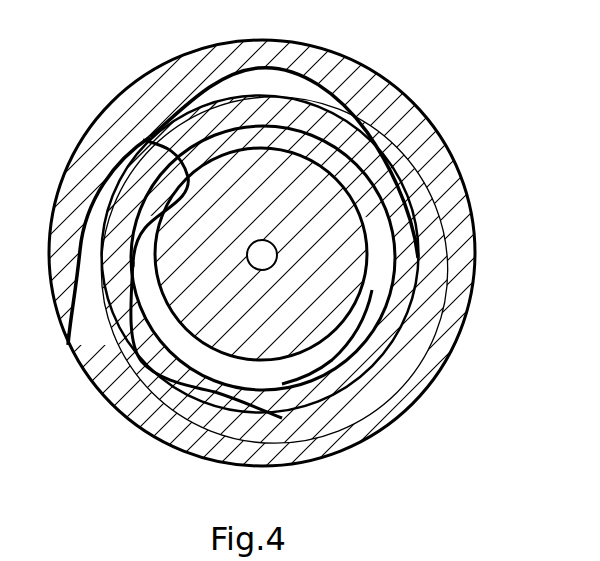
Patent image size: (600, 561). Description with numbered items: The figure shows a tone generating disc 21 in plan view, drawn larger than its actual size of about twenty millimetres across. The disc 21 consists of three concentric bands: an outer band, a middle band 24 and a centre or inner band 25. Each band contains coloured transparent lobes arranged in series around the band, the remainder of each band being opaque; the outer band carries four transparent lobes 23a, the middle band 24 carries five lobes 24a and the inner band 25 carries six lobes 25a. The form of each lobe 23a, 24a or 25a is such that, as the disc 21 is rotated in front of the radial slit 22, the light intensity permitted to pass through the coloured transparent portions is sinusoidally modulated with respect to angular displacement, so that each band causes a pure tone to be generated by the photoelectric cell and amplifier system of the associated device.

The disc 21 is at (407, 387).
The radial slit 22 is at (400, 217).
The middle band 24 is at (438, 242).
The inner band 25 is at (380, 267).
The transparent lobes of the outer band 23a is at (285, 87).
The transparent lobes of the middle band 24a is at (150, 143).
The transparent lobes of the inner band 25a is at (108, 350).